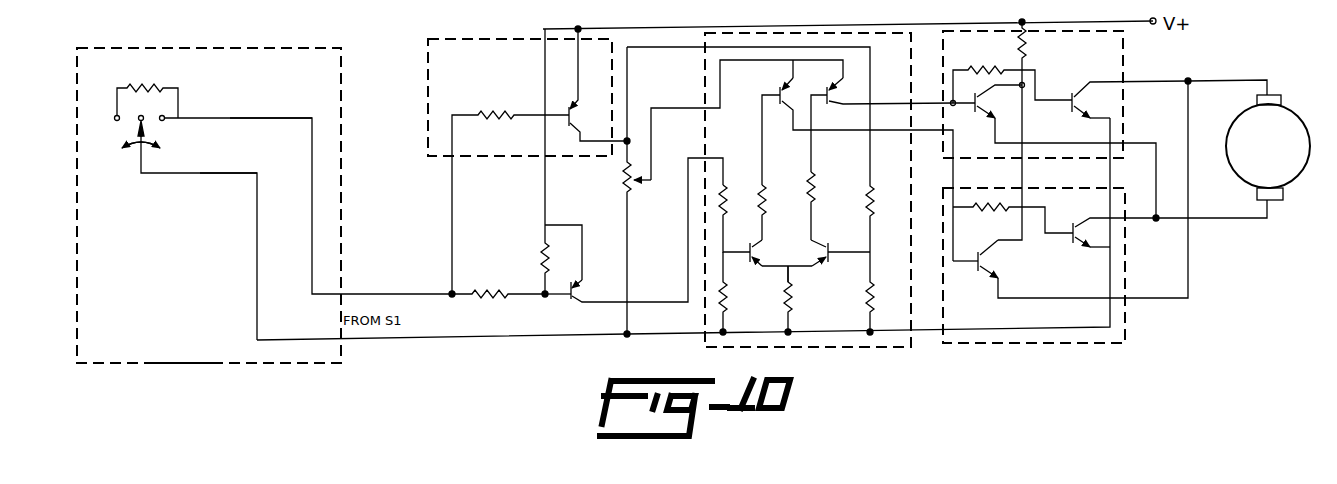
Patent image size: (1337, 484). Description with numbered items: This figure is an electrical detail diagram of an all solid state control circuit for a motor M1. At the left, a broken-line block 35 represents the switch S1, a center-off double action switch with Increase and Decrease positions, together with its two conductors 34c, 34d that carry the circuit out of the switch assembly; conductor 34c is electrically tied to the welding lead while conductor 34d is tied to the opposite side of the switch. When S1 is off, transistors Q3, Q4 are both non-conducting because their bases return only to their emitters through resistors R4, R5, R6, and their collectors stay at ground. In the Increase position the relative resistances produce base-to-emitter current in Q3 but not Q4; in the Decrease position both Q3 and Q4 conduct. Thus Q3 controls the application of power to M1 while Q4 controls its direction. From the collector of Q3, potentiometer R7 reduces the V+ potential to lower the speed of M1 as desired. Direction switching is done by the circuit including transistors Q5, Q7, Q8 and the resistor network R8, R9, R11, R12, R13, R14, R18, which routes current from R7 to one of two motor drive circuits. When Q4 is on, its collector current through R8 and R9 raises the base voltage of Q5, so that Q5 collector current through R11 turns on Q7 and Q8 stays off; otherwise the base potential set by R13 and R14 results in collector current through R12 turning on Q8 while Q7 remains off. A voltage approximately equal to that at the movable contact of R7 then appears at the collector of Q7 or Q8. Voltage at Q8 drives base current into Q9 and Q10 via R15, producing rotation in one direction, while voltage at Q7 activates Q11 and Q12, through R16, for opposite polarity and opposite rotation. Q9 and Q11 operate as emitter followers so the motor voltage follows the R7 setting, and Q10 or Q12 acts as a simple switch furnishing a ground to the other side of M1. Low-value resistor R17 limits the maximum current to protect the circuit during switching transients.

The conductor 34c is at (234, 174).
The conductor 34d is at (223, 118).
The switch circuit block 35 is at (184, 367).
The switch S1 is at (266, 212).
The resistor R4 is at (510, 202).
The resistor R5 is at (498, 305).
The resistor R6 is at (529, 161).
The potentiometer R7 is at (717, 190).
The resistor R8 is at (734, 218).
The resistor R9 is at (734, 292).
The resistor R11 is at (778, 212).
The resistor R12 is at (828, 206).
The resistor R13 is at (886, 216).
The resistor R14 is at (887, 292).
The resistor R15 is at (1012, 74).
The resistor R16 is at (1013, 218).
The resistor R17 is at (1028, 131).
The resistor R18 is at (807, 299).
The transistor Q3 is at (598, 85).
The transistor Q4 is at (634, 230).
The transistor Q5 is at (810, 261).
The transistor Q7 is at (857, 162).
The transistor Q8 is at (893, 116).
The transistor Q9 is at (1061, 151).
The transistor Q10 is at (1158, 108).
The transistor Q11 is at (1070, 192).
The transistor Q12 is at (1160, 235).
The motor M1 is at (1270, 147).